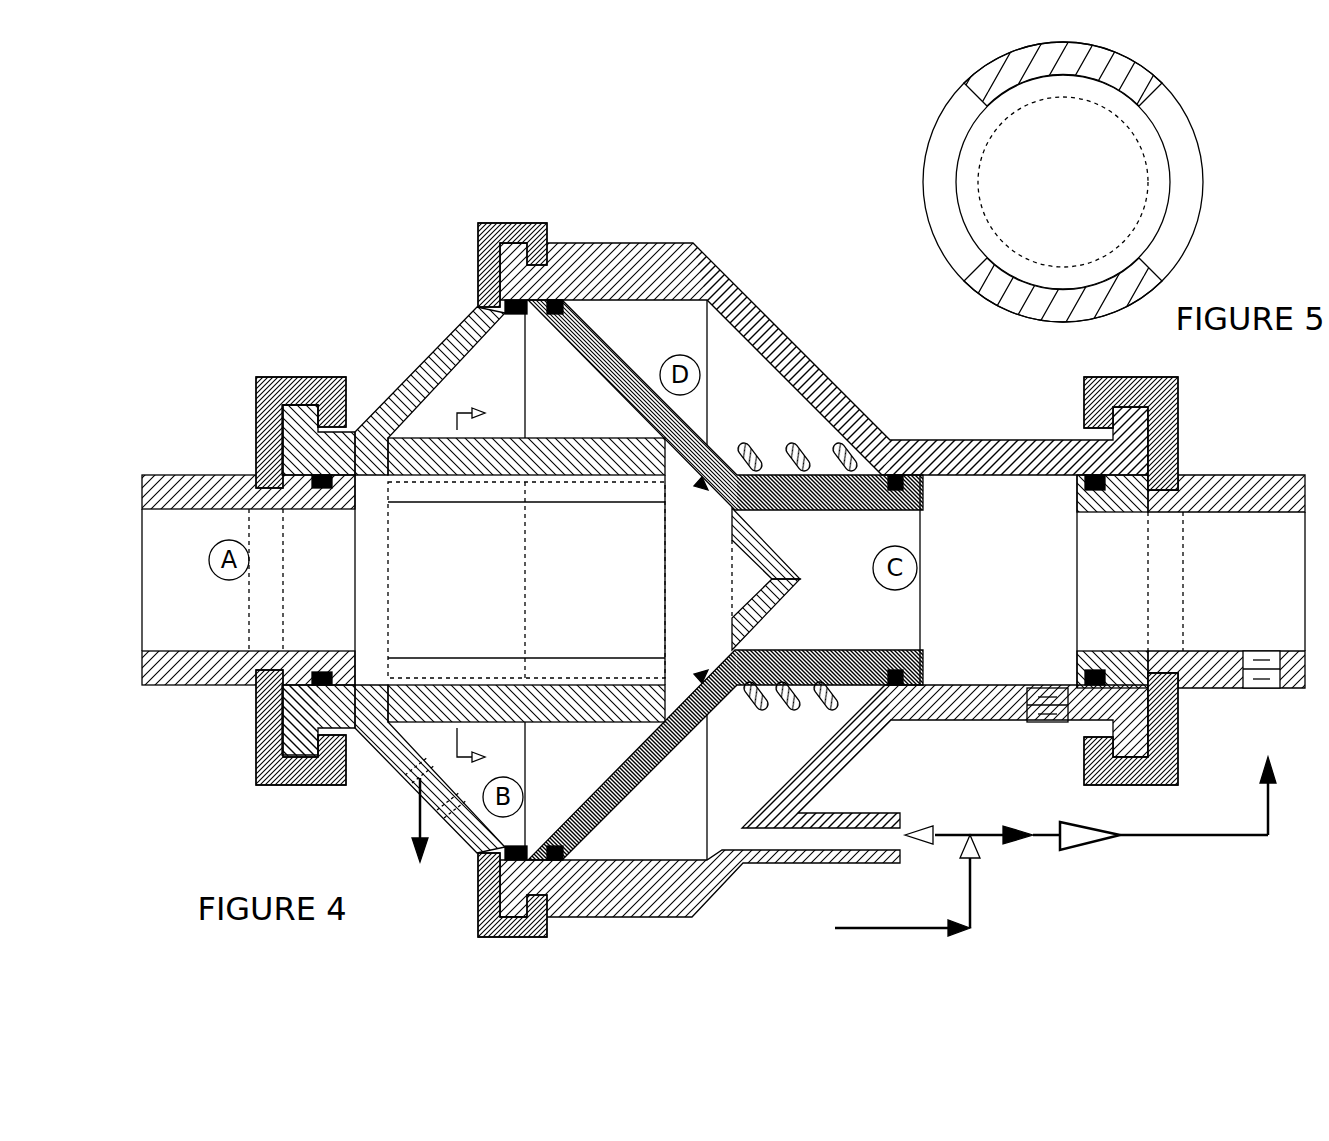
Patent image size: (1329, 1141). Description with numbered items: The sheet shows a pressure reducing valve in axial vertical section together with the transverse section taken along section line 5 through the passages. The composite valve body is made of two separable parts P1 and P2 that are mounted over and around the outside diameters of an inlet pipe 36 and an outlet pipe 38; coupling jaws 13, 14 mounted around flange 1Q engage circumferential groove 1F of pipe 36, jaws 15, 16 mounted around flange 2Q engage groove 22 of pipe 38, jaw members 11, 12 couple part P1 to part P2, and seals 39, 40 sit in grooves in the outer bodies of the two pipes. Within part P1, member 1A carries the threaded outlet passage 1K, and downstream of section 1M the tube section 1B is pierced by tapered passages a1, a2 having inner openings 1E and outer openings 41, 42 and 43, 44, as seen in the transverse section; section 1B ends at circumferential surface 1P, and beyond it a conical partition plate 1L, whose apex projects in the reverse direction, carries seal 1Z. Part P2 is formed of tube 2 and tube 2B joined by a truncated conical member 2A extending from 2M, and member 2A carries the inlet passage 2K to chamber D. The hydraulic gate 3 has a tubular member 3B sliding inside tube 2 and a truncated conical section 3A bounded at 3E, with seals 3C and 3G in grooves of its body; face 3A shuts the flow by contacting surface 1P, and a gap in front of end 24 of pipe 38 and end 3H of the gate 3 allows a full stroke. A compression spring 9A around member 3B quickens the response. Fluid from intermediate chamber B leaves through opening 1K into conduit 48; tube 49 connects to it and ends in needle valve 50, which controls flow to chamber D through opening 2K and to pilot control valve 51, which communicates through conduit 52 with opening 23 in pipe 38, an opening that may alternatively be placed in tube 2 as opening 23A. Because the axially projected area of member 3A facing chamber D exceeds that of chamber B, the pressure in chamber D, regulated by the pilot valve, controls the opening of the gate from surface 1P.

In FIG. 4, the body member of part P1 1A is at (413, 340).
In FIG. 4, the tube section 1B is at (545, 708).
In FIG. 4, the passage inner opening 1E is at (388, 587).
In FIG. 5, the passage inner opening 1E is at (990, 102).
In FIG. 4, the circumferential groove 1F is at (248, 475).
In FIG. 4, the outlet passage 1K is at (412, 785).
In FIG. 4, the conical partition plate 1L is at (782, 597).
In FIG. 4, the tube section 1M is at (365, 685).
In FIG. 4, the circumferential surface 1P is at (660, 433).
In FIG. 4, the flange 1Q is at (297, 750).
In FIG. 4, the seal 1Z is at (680, 530).
In FIG. 4, the tube of part P2 2 is at (960, 440).
In FIG. 4, the truncated conical member 2A is at (767, 310).
In FIG. 4, the tube of part P2 2B is at (623, 247).
In FIG. 4, the inlet passage 2K is at (830, 803).
In FIG. 4, the end of conical member 2M is at (888, 438).
In FIG. 4, the flange 2Q is at (1133, 423).
In FIG. 4, the hydraulic gate 3 is at (610, 362).
In FIG. 5, the hydraulic gate 3 is at (980, 168).
In FIG. 4, the truncated conical section 3A is at (607, 773).
In FIG. 4, the tubular member 3B is at (787, 643).
In FIG. 4, the seal 3C is at (563, 307).
In FIG. 4, the end of conical section 3E is at (738, 468).
In FIG. 4, the seal 3G is at (922, 655).
In FIG. 4, the gate end 3H is at (925, 495).
In FIG. 4, the section line 5 is at (482, 588).
In FIG. 4, the compression spring 9A is at (800, 707).
In FIG. 4, the jaw member 11 is at (490, 228).
In FIG. 4, the jaw member 12 is at (477, 935).
In FIG. 4, the coupling jaw 13 is at (256, 407).
In FIG. 4, the coupling jaw 14 is at (262, 745).
In FIG. 4, the coupling jaw 15 is at (1157, 398).
In FIG. 4, the coupling jaw 16 is at (1147, 780).
In FIG. 4, the circumferential groove 22 is at (1185, 475).
In FIG. 4, the opening 23 is at (1270, 690).
In FIG. 4, the opening 23A is at (1040, 725).
In FIG. 4, the pipe end 24 is at (1077, 507).
In FIG. 4, the inlet pipe 36 is at (205, 510).
In FIG. 4, the outlet pipe 38 is at (1298, 513).
In FIG. 4, the seal 39 is at (315, 650).
In FIG. 4, the seal 40 is at (1115, 515).
In FIG. 4, the outer passage opening 41 is at (553, 482).
In FIG. 5, the outer passage opening 41 is at (963, 87).
In FIG. 4, the outer passage opening 42 is at (558, 678).
In FIG. 5, the outer passage opening 42 is at (963, 278).
In FIG. 4, the outer passage opening 43 is at (1113, 672).
In FIG. 5, the outer passage opening 43 is at (1160, 85).
In FIG. 5, the outer passage opening 44 is at (1160, 278).
In FIG. 4, the conduit 48 is at (433, 833).
In FIG. 4, the tube 49 is at (902, 915).
In FIG. 4, the needle valve 50 is at (983, 847).
In FIG. 4, the pilot control valve 51 is at (1087, 833).
In FIG. 4, the conduit 52 is at (1273, 800).
In FIG. 5, the tapered passage a1 is at (937, 180).
In FIG. 5, the tapered passage a2 is at (1190, 175).
In FIG. 4, the valve body part P1 is at (457, 333).
In FIG. 4, the valve body part P2 is at (567, 263).